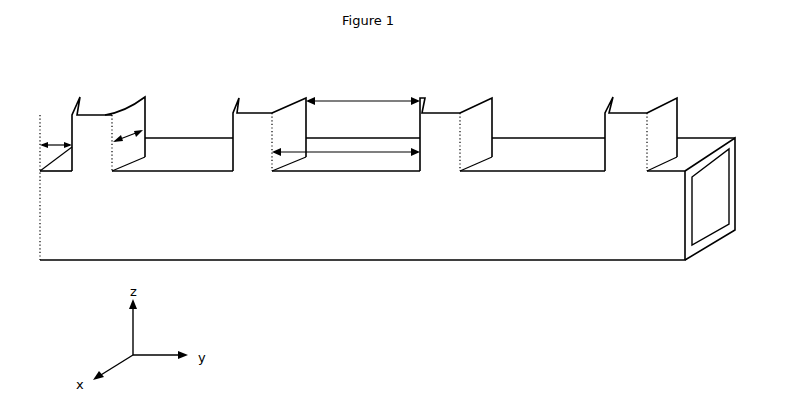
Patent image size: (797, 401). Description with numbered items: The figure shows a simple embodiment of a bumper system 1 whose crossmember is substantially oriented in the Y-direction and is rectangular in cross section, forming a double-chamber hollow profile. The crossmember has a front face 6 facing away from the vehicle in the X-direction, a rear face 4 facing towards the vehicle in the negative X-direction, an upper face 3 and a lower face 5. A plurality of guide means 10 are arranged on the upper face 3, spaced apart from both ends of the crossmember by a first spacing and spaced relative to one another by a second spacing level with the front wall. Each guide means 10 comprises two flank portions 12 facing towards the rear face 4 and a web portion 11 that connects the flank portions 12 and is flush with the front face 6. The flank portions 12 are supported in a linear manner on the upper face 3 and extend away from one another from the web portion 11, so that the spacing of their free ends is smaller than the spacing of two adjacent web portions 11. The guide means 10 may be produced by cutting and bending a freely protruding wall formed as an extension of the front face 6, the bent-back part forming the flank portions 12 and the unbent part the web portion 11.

The bumper system 1 is at (78, 283).
The upper face 3 is at (518, 153).
The rear face 4 is at (735, 176).
The lower face 5 is at (692, 247).
The front face 6 is at (553, 200).
The guide means 10 is at (70, 93).
The web portion 11 is at (100, 150).
The flank portion 12 is at (131, 117).